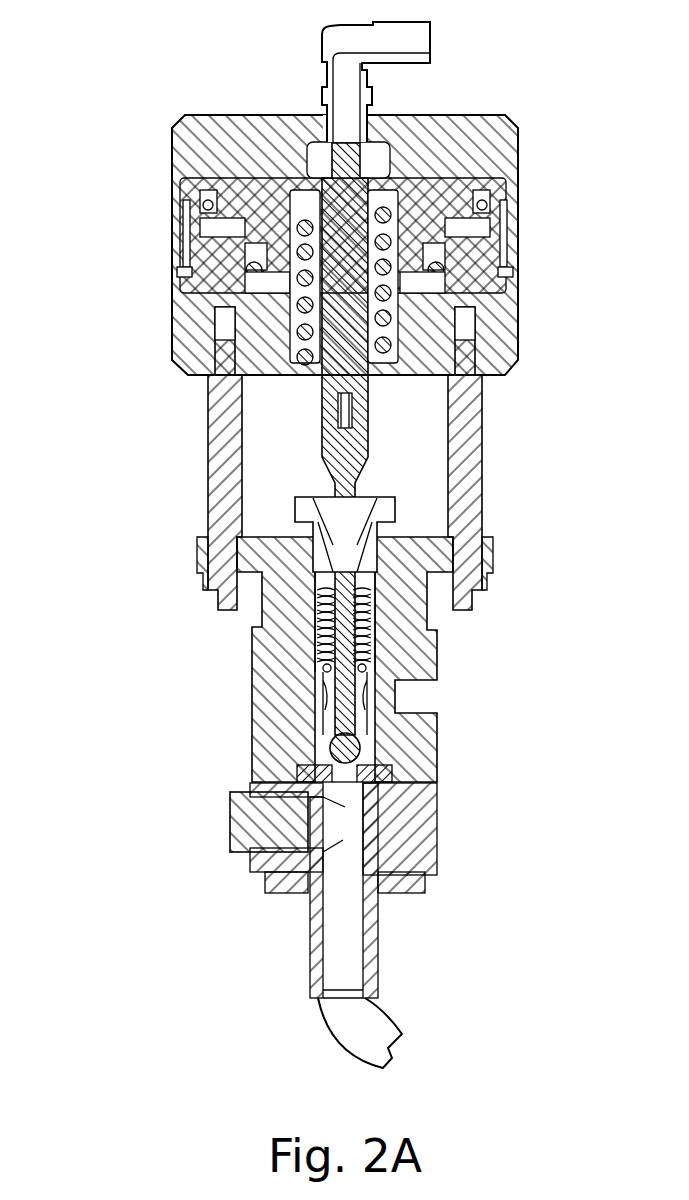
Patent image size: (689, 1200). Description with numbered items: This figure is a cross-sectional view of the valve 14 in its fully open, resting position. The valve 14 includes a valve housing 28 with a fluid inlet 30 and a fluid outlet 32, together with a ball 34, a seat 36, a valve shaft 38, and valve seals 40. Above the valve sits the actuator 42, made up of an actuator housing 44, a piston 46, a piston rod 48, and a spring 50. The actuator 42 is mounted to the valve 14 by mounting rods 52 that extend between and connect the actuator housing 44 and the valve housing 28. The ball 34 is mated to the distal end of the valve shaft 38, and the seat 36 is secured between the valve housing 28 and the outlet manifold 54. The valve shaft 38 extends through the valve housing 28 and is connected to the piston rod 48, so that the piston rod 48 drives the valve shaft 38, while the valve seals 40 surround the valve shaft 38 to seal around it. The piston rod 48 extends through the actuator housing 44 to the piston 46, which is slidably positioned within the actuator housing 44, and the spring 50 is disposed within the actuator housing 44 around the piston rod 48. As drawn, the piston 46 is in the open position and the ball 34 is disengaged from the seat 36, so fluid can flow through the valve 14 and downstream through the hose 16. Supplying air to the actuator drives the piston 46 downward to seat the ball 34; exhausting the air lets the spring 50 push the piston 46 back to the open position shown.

The valve 14 is at (248, 705).
The hose 16 is at (323, 1027).
The valve housing 28 is at (403, 635).
The fluid inlet 30 is at (424, 707).
The fluid outlet 32 is at (360, 793).
The ball 34 is at (340, 750).
The seat 36 is at (390, 772).
The valve shaft 38 is at (347, 505).
The valve seals 40 is at (327, 625).
The actuator 42 is at (168, 250).
The actuator housing 44 is at (257, 130).
The piston 46 is at (427, 192).
The piston rod 48 is at (345, 360).
The spring 50 is at (305, 373).
The mounting rods 52 is at (457, 448).
The outlet manifold 54 is at (390, 848).